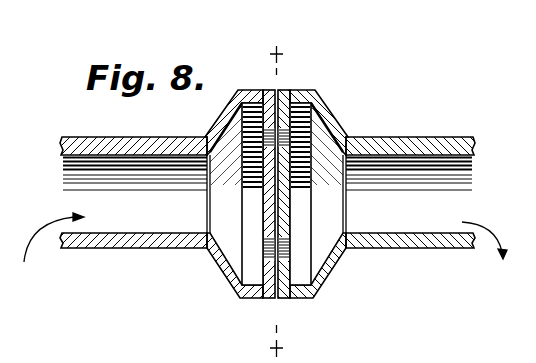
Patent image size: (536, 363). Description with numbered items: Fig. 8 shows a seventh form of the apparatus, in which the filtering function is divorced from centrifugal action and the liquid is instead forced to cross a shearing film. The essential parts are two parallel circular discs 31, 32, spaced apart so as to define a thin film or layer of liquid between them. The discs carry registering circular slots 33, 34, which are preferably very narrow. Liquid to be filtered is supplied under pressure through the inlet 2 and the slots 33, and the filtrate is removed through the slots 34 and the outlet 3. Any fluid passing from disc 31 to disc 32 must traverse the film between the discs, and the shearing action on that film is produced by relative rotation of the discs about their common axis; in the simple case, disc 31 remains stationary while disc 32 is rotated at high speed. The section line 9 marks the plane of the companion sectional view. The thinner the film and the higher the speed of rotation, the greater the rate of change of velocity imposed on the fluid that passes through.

The inlet 2 is at (66, 197).
The outlet 3 is at (472, 192).
The section line 9- 9 is at (270, 54).
The circular disc 31 is at (272, 118).
The circular disc 32 is at (284, 104).
The circular slots 33 is at (241, 128).
The circular slots 34 is at (309, 131).